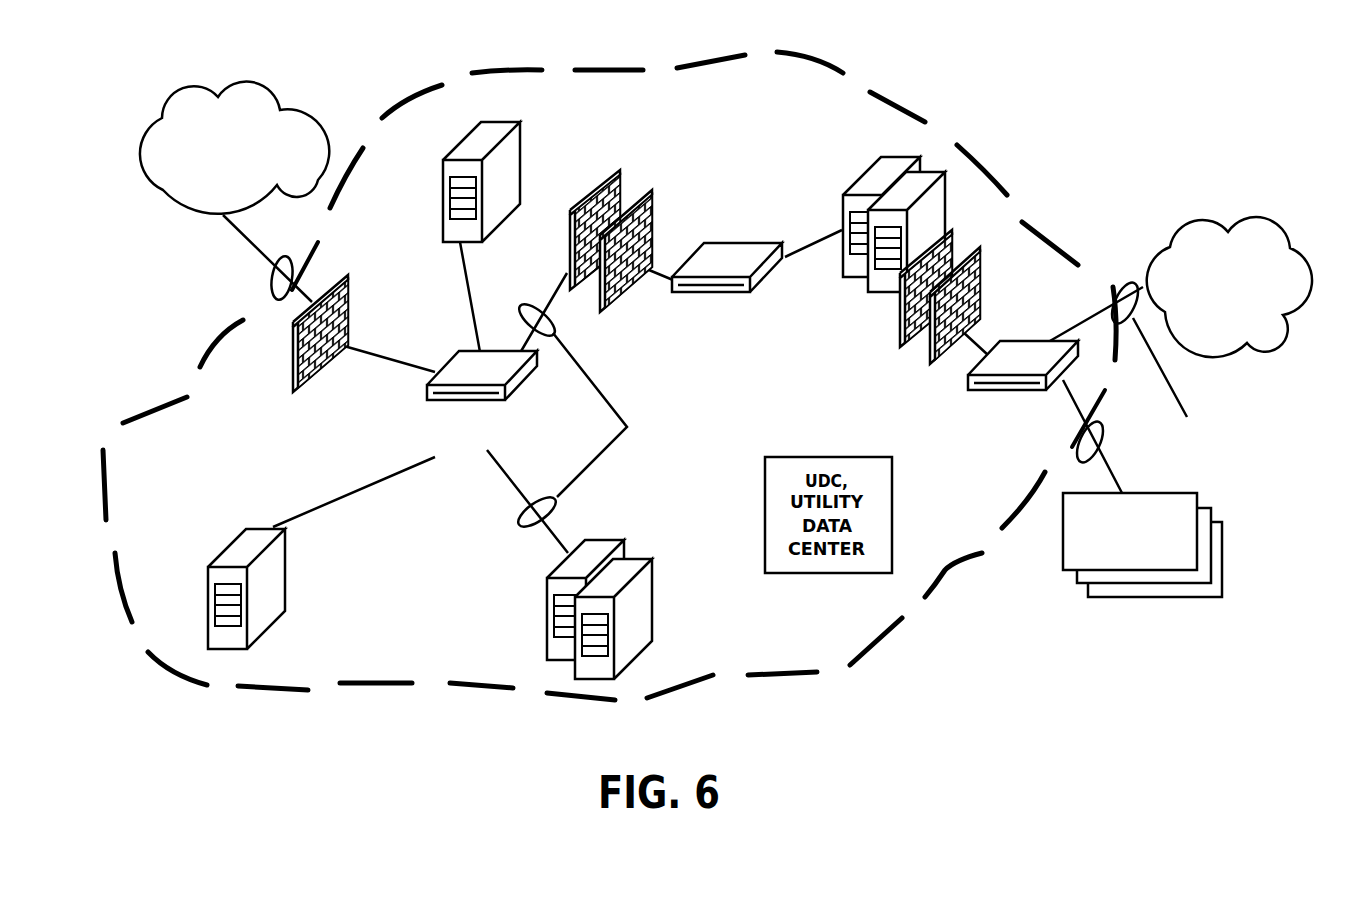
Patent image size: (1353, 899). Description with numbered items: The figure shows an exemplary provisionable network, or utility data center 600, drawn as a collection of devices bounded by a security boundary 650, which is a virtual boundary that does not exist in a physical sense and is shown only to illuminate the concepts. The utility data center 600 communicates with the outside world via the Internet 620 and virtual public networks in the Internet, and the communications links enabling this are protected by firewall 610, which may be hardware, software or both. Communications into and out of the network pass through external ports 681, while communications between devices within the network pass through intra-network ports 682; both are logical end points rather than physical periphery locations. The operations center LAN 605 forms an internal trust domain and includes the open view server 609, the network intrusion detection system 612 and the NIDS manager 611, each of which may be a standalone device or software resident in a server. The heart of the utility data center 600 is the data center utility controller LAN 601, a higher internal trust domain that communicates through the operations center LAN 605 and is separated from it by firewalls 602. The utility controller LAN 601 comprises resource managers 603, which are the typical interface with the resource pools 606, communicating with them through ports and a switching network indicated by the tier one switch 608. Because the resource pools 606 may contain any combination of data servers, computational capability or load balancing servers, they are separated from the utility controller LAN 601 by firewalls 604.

The utility data center 600 is at (677, 27).
The data center utility controller LAN 601 is at (720, 316).
The firewalls 602 is at (618, 177).
The resource managers 603 is at (917, 163).
The firewalls 604 is at (960, 262).
The operations center LAN 605 is at (480, 426).
The resource pools 606 is at (1252, 274).
The tier 1 switch 608 is at (1017, 416).
The open view server 609 is at (502, 180).
The firewall 610 is at (293, 393).
The NIDS manager 611 is at (292, 652).
The network intrusion detection system 612 is at (680, 662).
The Internet 620 is at (247, 149).
The security boundary 650 is at (695, 678).
The external ports 681 is at (1100, 442).
The intra-network ports 682 is at (663, 419).